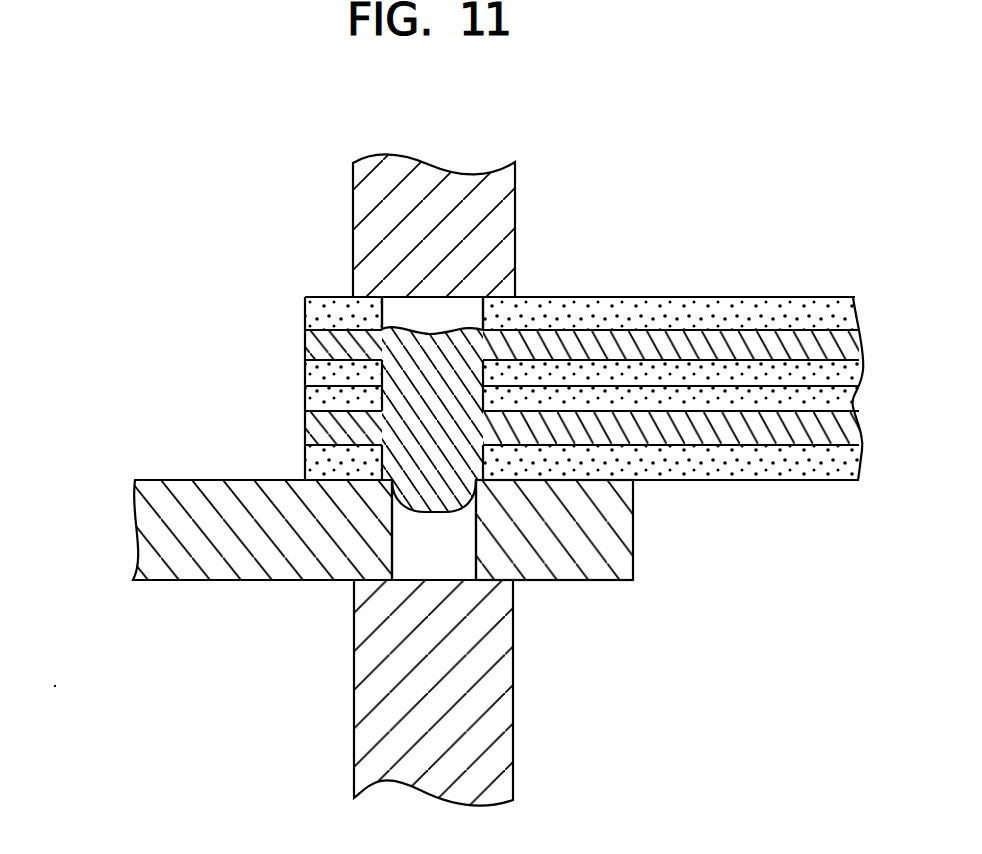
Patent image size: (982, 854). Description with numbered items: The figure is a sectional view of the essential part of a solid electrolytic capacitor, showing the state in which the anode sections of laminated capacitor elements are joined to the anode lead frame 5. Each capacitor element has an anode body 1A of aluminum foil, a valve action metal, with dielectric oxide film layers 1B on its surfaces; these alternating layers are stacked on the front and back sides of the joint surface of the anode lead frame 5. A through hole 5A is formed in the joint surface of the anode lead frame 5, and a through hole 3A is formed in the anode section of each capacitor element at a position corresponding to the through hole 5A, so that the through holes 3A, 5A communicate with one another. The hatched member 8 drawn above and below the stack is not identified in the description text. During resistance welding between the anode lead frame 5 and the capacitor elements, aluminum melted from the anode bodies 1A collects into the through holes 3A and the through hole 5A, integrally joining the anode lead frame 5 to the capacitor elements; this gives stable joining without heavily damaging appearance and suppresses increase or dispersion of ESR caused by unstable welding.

The fastening member / pin 8 is at (500, 207).
The anode body 1A is at (305, 343).
The dielectric oxide film layer 1B is at (305, 302).
The through hole 3A is at (470, 316).
The anode lead frame 5 is at (173, 540).
The through hole 5A is at (407, 543).